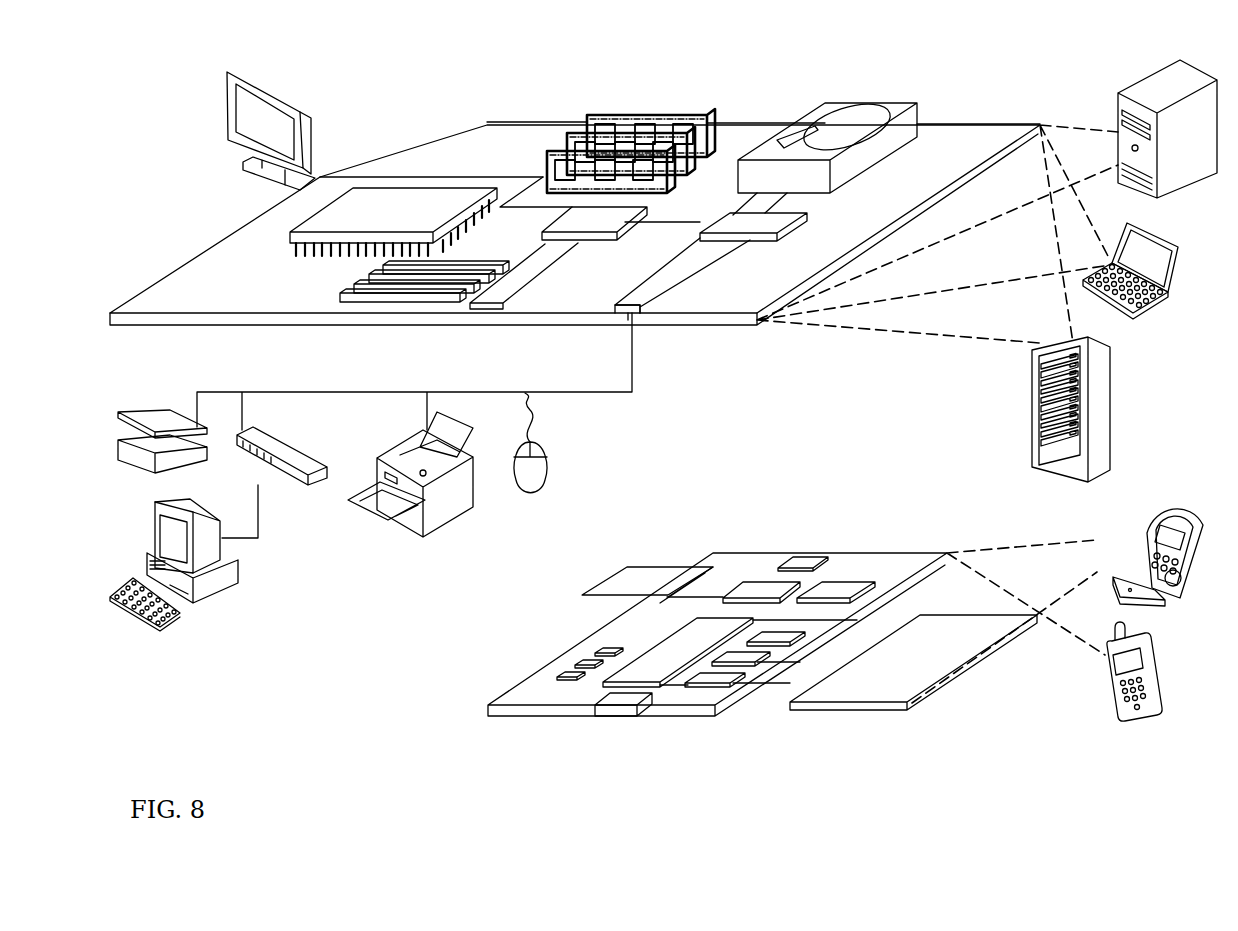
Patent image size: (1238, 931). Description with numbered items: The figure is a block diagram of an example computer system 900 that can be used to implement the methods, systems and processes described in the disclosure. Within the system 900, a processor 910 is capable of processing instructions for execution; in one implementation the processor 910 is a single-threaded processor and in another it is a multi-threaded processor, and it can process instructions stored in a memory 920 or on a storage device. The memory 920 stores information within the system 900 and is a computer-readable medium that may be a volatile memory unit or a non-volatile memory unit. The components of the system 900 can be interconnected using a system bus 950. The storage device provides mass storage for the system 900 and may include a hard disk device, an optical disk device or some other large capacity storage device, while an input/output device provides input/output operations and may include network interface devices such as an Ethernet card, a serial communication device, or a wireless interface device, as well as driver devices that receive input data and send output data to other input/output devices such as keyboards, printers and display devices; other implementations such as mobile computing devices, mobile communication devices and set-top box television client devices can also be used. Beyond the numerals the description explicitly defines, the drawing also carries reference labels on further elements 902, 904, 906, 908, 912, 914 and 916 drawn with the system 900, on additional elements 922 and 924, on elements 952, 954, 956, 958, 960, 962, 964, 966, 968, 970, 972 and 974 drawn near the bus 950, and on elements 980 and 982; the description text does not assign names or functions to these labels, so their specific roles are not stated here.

The computer system 900 is at (408, 96).
The processor 902 is at (290, 235).
The memory modules 904 is at (590, 116).
The hard disk drive 906 is at (823, 104).
The graphics processor / chip 908 is at (575, 218).
The processor 910 is at (345, 292).
The input/output controller 912 is at (737, 218).
The network connection 914 is at (637, 314).
The display monitor 916 is at (228, 74).
The memory 920 is at (1117, 110).
The laptop computer 922 is at (1179, 250).
The server 924 is at (1032, 430).
The system bus 950 is at (462, 715).
The processor 952 is at (652, 673).
The display 954 is at (873, 690).
The memory 956 is at (713, 678).
The memory 958 is at (747, 663).
The memory 960 is at (770, 643).
The connector 962 is at (630, 693).
The sensors 964 is at (573, 664).
The controller 966 is at (765, 590).
The communication module 968 is at (838, 588).
The antenna module 970 is at (810, 558).
The bus 972 is at (697, 567).
The power module 974 is at (630, 567).
The flip phone 980 is at (1160, 532).
The mobile phone 982 is at (1107, 676).